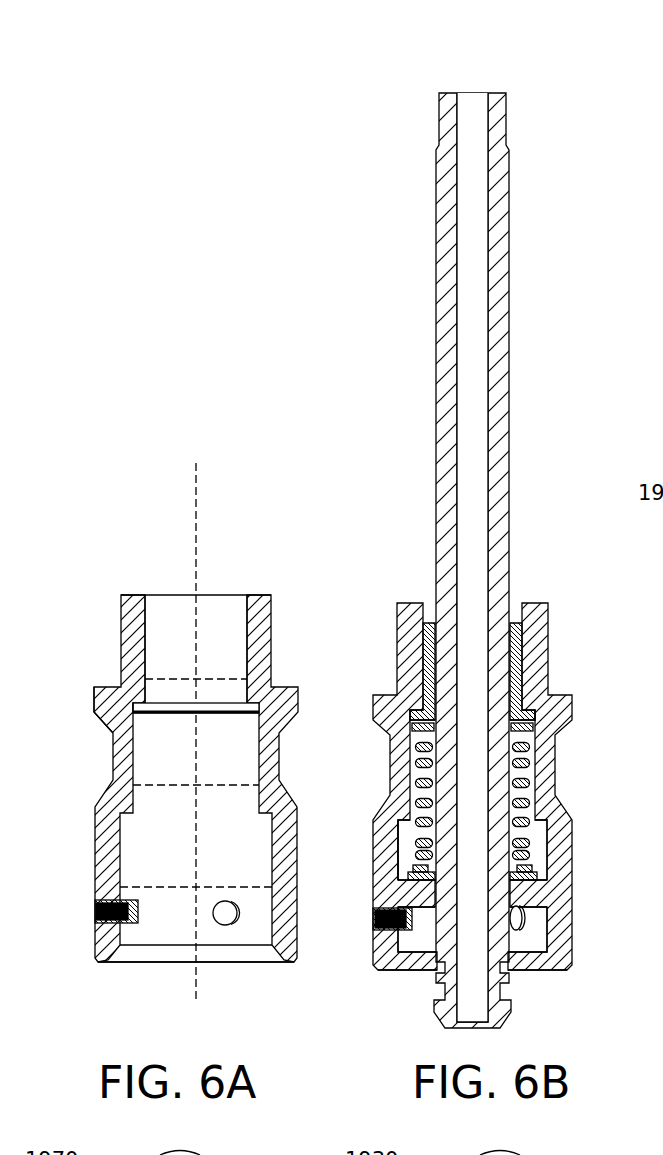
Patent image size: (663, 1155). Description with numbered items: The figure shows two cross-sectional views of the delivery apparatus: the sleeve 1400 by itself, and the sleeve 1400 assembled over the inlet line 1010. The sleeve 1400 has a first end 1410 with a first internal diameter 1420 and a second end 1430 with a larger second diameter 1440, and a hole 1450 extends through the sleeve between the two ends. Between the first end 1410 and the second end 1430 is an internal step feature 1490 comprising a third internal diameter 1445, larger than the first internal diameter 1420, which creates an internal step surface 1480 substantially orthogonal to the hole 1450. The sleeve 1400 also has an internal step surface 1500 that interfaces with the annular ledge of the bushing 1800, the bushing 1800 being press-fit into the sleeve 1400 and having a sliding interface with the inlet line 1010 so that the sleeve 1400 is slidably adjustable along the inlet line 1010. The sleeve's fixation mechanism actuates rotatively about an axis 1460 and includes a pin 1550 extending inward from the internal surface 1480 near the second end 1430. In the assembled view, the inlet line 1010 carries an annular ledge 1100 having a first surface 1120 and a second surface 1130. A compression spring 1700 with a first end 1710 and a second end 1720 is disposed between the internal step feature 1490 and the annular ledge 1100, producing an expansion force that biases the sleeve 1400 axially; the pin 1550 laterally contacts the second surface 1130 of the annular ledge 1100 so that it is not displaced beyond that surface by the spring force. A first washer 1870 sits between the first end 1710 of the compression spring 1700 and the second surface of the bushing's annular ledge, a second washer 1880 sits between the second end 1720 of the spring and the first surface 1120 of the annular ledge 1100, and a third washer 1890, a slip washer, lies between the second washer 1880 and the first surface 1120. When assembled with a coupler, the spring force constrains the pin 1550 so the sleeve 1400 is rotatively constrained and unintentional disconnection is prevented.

In FIG. 6B, the inlet line 1010 is at (518, 275).
In FIG. 6B, the annular ledge 1100 is at (545, 893).
In FIG. 6B, the first surface 1120 is at (400, 872).
In FIG. 6B, the second surface 1130 is at (533, 912).
In FIG. 6A, the sleeve 1400 is at (155, 719).
In FIG. 6B, the sleeve 1400 is at (488, 570).
In FIG. 6A, the first end 1410 is at (112, 585).
In FIG. 6B, the first end 1410 is at (385, 584).
In FIG. 6A, the first internal diameter 1420 is at (170, 666).
In FIG. 6A, the second end 1430 is at (90, 975).
In FIG. 6B, the second end 1430 is at (385, 985).
In FIG. 6A, the second diameter 1440 is at (223, 889).
In FIG. 6A, the third internal diameter 1445 is at (160, 771).
In FIG. 6A, the hole 1450 is at (165, 611).
In FIG. 6A, the axis 1460 is at (198, 498).
In FIG. 6A, the internal step surface 1480 is at (255, 714).
In FIG. 6A, the internal step feature 1490 is at (130, 718).
In FIG. 6A, the internal step surface 1500 is at (134, 707).
In FIG. 6A, the pin 1550 is at (90, 920).
In FIG. 6B, the pin 1550 is at (365, 925).
In FIG. 6B, the compression spring 1700 is at (535, 778).
In FIG. 6B, the first end 1710 is at (408, 741).
In FIG. 6B, the second end 1720 is at (405, 845).
In FIG. 6B, the bushing 1800 is at (525, 680).
In FIG. 6B, the washer 1870 is at (558, 717).
In FIG. 6B, the second washer 1880 is at (540, 862).
In FIG. 6B, the third washer 1890 is at (545, 872).